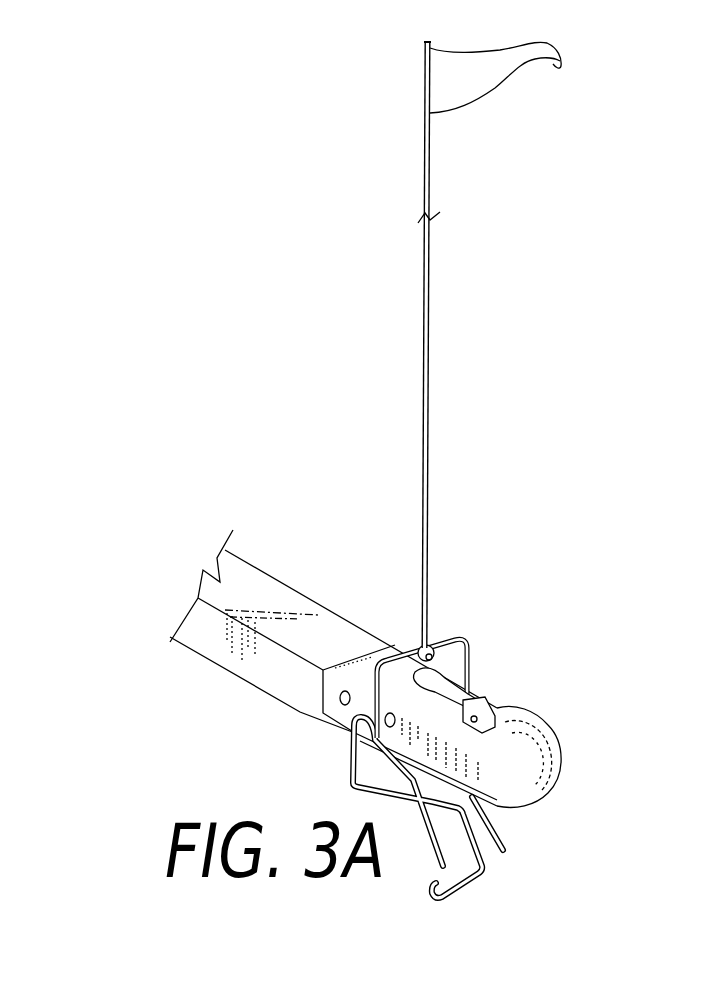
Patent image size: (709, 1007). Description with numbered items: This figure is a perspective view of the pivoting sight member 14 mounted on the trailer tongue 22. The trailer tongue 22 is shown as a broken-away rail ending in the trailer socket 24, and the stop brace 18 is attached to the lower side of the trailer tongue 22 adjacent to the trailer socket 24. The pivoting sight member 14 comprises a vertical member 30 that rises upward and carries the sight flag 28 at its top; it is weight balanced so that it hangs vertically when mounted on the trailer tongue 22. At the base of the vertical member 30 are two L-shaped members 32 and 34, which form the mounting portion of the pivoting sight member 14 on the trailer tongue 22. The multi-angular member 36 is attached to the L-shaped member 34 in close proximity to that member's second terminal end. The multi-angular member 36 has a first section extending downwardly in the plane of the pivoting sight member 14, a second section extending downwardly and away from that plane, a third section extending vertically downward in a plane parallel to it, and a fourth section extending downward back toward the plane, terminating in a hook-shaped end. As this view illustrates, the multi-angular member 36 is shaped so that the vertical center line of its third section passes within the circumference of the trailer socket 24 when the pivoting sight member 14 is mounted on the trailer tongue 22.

The pivoting sight member 14 is at (466, 376).
The stop brace 18 is at (512, 856).
The trailer tongue 22 is at (263, 560).
The trailer socket 24 is at (569, 752).
The sight flag 28 is at (517, 67).
The vertical member 30 is at (428, 315).
The L-shaped member 32 is at (480, 661).
The L-shaped member 34 is at (365, 682).
The multi-angular member 36 is at (371, 800).